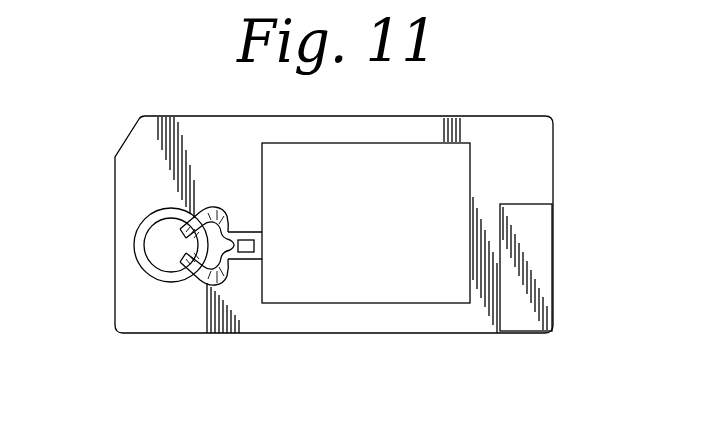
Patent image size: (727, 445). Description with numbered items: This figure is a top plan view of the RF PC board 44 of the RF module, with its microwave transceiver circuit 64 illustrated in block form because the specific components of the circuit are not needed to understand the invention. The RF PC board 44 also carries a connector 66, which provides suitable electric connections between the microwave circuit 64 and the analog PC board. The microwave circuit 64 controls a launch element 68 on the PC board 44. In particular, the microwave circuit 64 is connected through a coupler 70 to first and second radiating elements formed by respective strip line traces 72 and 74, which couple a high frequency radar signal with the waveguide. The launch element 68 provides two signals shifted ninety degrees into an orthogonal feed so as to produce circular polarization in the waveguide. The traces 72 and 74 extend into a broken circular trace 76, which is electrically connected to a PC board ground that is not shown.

The RF PC board 44 is at (368, 224).
The microwave transceiver circuit 64 is at (374, 177).
The connector 66 is at (558, 267).
The launch element 68 is at (217, 205).
The coupler 70 is at (259, 319).
The strip line trace 72 is at (175, 320).
The strip line trace 74 is at (183, 209).
The broken circular trace 76 is at (121, 246).